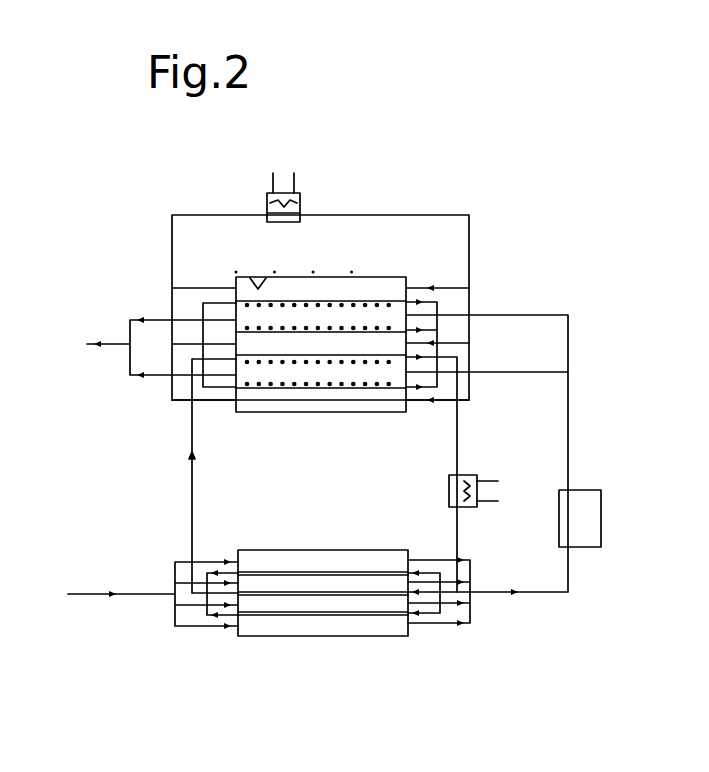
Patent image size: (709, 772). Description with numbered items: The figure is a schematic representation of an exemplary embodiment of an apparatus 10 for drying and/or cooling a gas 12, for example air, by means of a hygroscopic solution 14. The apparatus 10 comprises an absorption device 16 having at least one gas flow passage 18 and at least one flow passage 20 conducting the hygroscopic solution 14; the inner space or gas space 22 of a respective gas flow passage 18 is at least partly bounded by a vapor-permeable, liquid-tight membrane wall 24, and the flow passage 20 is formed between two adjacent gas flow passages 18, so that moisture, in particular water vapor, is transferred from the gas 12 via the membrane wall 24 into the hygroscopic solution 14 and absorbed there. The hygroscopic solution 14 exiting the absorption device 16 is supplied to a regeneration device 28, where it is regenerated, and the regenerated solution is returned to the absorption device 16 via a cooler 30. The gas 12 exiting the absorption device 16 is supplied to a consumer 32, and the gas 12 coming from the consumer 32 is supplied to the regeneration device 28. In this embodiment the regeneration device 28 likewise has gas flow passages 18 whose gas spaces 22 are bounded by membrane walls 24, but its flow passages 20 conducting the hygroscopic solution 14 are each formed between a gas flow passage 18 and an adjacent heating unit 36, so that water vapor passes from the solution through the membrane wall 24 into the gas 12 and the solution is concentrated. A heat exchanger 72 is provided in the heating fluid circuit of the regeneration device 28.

The apparatus 10 is at (397, 128).
The gas 12 is at (120, 347).
The hygroscopic solution 14 is at (190, 472).
The absorption device 16 is at (383, 647).
The gas flow passage 18 is at (312, 318).
The flow passage 20 is at (236, 303).
The gas space 22 is at (374, 287).
The membrane wall 24 is at (380, 328).
The regeneration device 28 is at (338, 270).
The cooler 30 is at (448, 490).
The consumer 32 is at (592, 513).
The heating unit 36 is at (250, 278).
The heat exchanger 72 is at (268, 200).